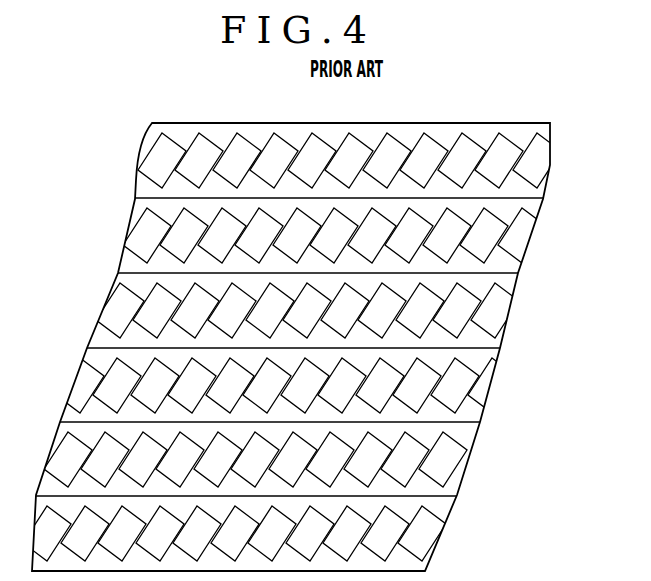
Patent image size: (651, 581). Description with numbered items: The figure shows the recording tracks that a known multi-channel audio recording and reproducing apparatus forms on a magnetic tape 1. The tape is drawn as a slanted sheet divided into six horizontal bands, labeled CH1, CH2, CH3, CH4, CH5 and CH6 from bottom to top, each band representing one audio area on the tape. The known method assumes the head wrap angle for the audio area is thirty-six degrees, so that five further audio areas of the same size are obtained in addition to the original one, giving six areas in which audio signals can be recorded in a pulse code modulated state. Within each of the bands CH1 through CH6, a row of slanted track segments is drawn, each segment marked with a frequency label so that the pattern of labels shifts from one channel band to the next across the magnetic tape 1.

The magnetic tape 1 is at (222, 123).
The channel 1 audio area CH1 is at (428, 538).
The channel 2 audio area CH2 is at (470, 460).
The channel 3 audio area CH3 is at (487, 390).
The channel 4 audio area CH4 is at (507, 317).
The channel 5 audio area CH5 is at (533, 240).
The channel 6 audio area CH6 is at (549, 175).